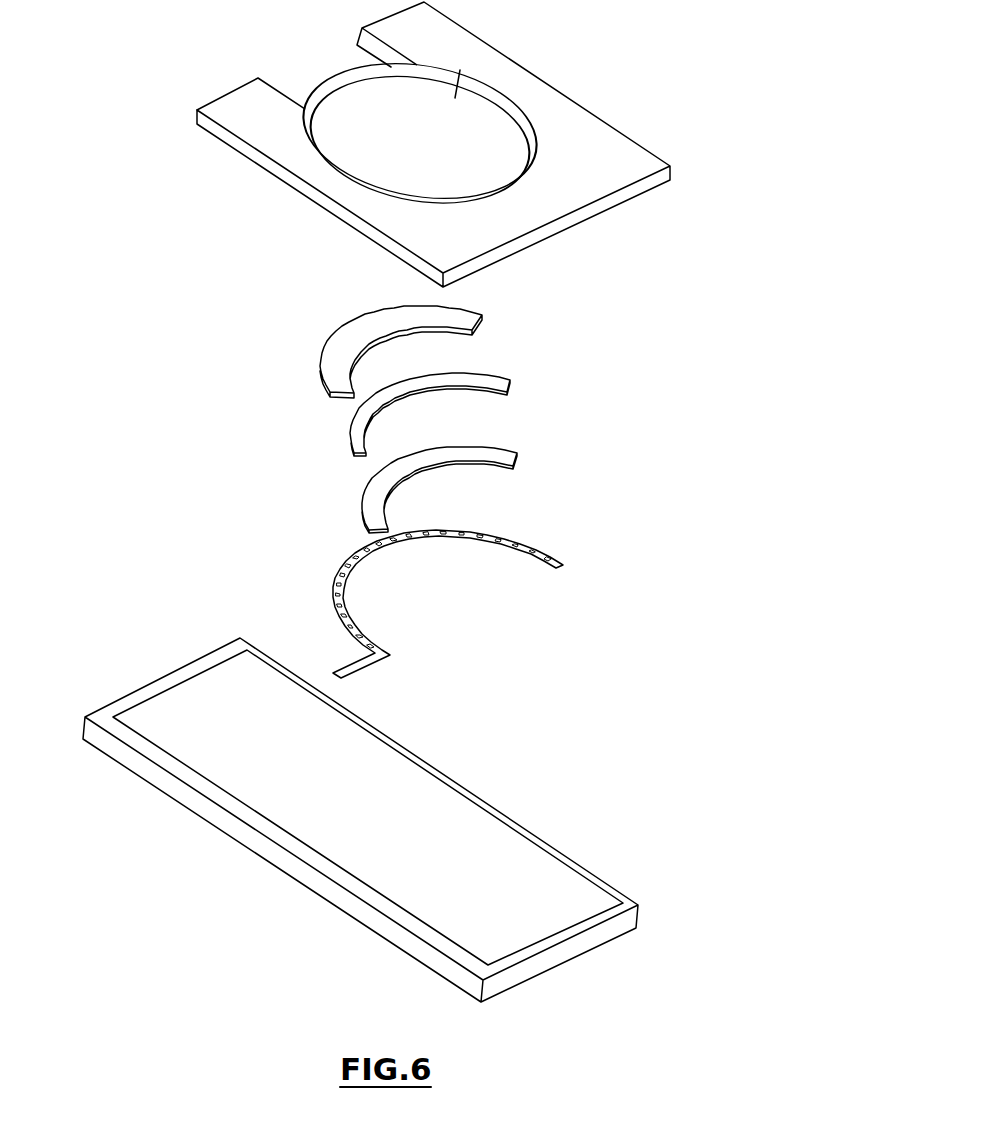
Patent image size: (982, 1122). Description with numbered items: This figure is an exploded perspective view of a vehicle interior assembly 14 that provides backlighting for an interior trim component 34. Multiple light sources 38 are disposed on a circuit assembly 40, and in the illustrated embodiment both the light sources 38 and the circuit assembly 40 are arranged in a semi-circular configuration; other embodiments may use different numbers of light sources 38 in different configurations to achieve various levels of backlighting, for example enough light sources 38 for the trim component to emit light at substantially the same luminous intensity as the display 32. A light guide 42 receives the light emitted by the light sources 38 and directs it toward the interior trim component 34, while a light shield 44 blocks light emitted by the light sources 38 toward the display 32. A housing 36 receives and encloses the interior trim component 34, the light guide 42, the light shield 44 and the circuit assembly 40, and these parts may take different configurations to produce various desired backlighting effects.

The rotary connector assembly 14 is at (118, 434).
The display 32 is at (473, 913).
The interior trim component 34 is at (448, 323).
The housing 36 is at (513, 113).
The light sources 38 is at (342, 590).
The circuit assembly 40 is at (441, 576).
The light guide 42 is at (366, 441).
The light shield 44 is at (497, 457).